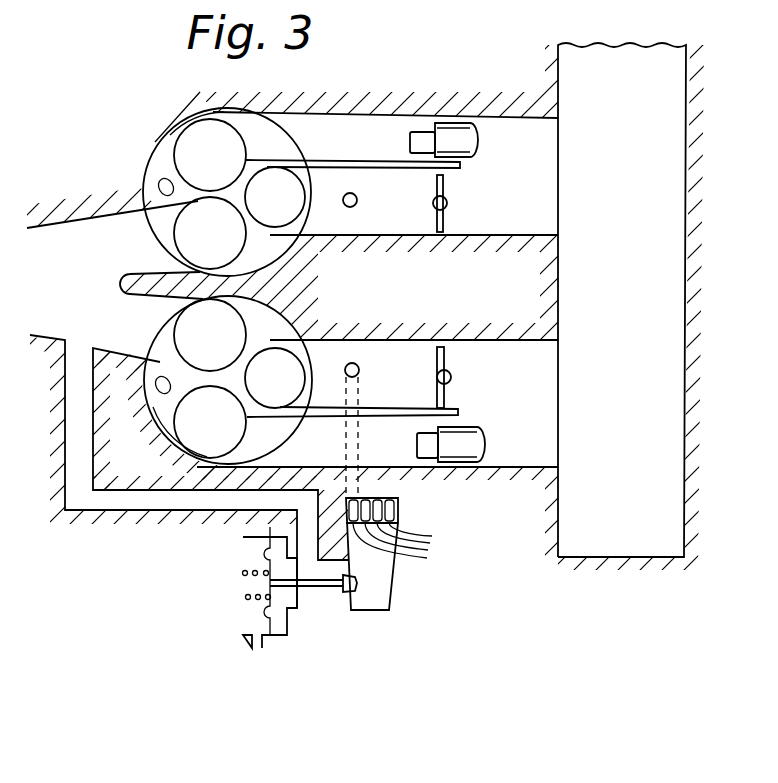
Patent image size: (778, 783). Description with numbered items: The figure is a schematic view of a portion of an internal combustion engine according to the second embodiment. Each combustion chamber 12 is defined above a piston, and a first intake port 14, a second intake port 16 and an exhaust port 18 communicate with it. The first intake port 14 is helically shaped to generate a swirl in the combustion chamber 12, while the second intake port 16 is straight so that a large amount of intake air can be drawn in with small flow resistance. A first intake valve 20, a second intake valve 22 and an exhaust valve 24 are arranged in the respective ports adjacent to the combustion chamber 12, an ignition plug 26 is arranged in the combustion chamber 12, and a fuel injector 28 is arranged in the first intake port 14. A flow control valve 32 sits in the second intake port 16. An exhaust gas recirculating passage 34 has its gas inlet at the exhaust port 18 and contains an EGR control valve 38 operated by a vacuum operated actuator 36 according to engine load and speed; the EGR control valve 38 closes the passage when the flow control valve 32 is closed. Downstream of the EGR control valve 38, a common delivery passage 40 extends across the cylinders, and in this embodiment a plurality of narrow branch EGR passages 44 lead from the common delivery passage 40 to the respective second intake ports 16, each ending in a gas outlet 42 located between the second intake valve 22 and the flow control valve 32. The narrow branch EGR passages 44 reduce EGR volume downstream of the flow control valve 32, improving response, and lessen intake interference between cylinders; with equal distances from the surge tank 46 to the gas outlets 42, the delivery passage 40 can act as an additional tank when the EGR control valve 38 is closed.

The combustion chamber 12 is at (163, 166).
The first intake port 14 is at (392, 123).
The second intake port 16 is at (331, 177).
The exhaust port 18 is at (82, 317).
The first intake valve 20 is at (196, 426).
The second intake valve 22 is at (261, 385).
The exhaust valve 24 is at (196, 342).
The ignition plug 26 is at (158, 186).
The fuel injector 28 is at (455, 131).
The flow control valve 32 is at (447, 187).
The exhaust gas recirculating passage 34 is at (135, 505).
The vacuum operated actuator 36 is at (243, 623).
The EGR control valve 38 is at (347, 597).
The common delivery passage 40 is at (388, 602).
The gas outlet 42 is at (350, 208).
The branch EGR passage 44 is at (398, 537).
The surge tank 46 is at (603, 558).